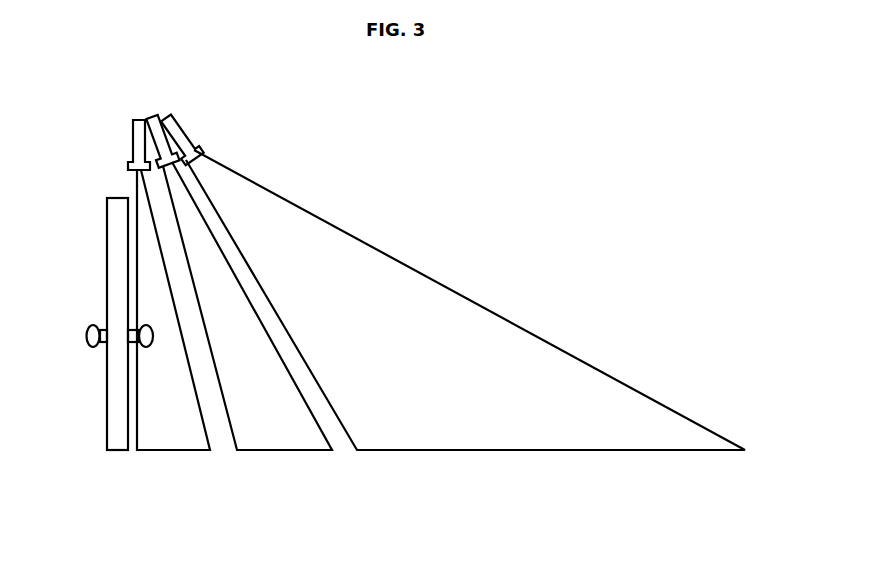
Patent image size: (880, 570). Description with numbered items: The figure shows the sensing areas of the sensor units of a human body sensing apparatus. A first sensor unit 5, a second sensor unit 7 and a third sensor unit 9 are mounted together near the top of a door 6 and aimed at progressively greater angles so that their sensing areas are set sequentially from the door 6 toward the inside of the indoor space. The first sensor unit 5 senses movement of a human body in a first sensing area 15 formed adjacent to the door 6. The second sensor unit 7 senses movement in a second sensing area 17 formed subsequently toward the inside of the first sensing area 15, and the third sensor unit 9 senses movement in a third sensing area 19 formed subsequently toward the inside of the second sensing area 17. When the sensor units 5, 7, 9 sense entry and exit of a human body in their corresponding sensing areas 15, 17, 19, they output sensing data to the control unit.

The first sensor unit 5 is at (132, 140).
The door 6 is at (115, 225).
The second sensor unit 7 is at (145, 120).
The third sensor unit 9 is at (163, 120).
The first sensing area 15 is at (170, 432).
The second sensing area 17 is at (282, 432).
The third sensing area 19 is at (490, 428).